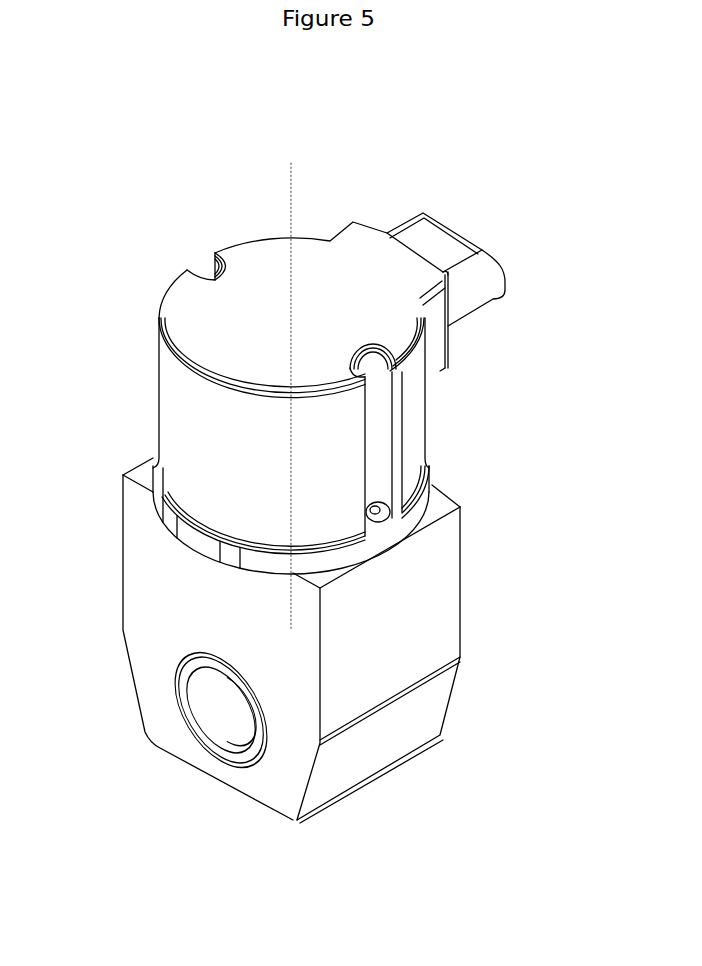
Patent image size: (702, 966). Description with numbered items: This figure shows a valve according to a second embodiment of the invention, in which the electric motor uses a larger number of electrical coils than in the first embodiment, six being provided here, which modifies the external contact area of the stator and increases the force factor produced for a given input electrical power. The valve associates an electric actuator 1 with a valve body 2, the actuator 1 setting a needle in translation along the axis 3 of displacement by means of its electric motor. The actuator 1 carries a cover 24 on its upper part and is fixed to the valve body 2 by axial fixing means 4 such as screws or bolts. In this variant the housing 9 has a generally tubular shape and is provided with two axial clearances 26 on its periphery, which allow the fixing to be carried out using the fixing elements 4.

The electric actuator 1 is at (410, 425).
The valve body 2 is at (432, 597).
The axis of displacement 3 is at (293, 195).
The axial fixing means 4 is at (400, 512).
The housing 9 is at (188, 436).
The cover 24 is at (268, 268).
The axial clearances 26 is at (378, 397).